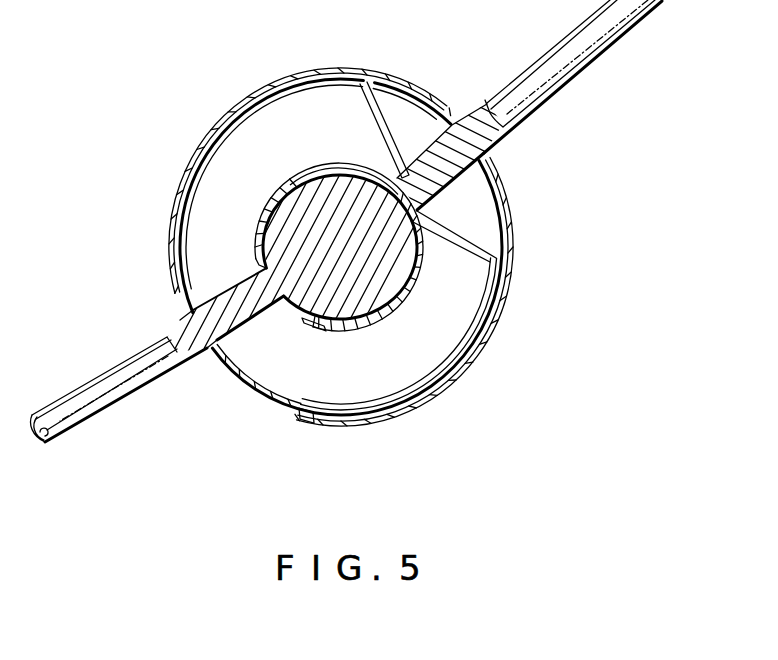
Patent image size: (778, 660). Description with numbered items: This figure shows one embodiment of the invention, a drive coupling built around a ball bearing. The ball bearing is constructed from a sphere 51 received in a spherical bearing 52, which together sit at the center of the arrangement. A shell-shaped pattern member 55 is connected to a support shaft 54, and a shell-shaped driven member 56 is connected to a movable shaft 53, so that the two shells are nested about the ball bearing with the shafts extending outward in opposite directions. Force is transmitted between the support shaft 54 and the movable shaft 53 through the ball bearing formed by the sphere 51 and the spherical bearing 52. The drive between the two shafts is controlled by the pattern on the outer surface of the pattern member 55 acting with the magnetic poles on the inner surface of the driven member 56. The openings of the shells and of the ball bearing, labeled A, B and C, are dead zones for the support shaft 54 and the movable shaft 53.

The sphere 51 is at (300, 302).
The spherical bearing 52 is at (330, 162).
The movable shaft 53 is at (583, 52).
The support shaft 54 is at (130, 382).
The pattern member 55 is at (182, 290).
The driven member 56 is at (512, 232).